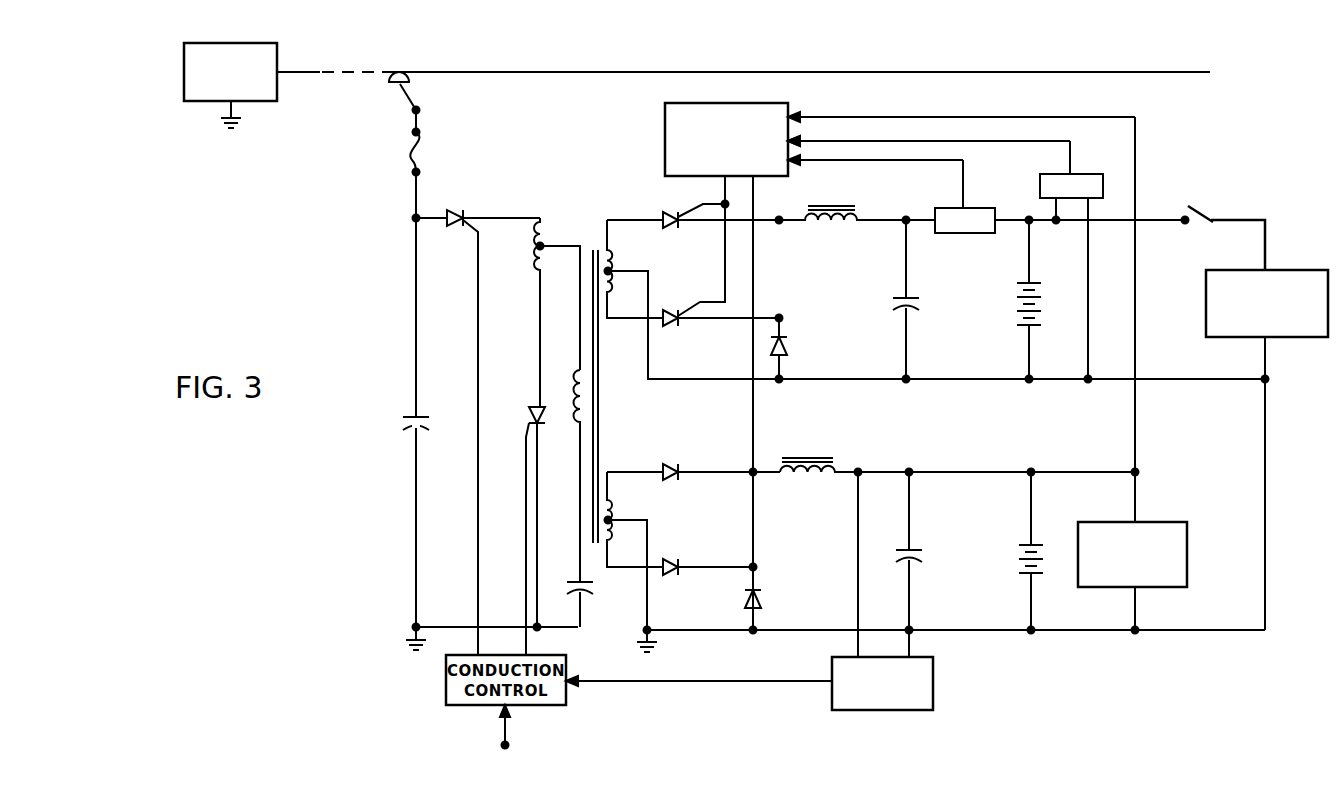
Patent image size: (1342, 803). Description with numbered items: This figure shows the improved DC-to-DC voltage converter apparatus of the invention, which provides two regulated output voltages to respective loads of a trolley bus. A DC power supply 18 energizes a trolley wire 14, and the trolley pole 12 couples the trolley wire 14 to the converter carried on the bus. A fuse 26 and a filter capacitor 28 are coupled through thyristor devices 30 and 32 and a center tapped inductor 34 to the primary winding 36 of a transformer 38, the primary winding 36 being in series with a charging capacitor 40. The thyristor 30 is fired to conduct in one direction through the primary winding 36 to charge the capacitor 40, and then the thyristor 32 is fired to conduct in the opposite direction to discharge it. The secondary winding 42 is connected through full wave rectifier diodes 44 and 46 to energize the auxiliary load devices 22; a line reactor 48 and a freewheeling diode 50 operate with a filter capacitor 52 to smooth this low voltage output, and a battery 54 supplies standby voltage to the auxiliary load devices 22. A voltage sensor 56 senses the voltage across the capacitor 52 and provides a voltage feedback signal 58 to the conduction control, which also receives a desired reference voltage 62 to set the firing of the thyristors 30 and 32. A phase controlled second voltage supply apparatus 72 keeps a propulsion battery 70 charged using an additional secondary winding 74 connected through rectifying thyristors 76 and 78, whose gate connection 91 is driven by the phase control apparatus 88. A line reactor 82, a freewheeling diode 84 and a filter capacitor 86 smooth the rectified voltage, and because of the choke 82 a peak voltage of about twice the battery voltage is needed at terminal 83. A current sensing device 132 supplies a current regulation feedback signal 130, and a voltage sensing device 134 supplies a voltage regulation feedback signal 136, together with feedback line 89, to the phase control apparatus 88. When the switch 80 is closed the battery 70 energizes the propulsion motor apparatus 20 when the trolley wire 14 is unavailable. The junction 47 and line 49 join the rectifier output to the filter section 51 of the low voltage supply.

The DC power supply 18 is at (277, 56).
The trolley wire 14 is at (420, 72).
The trolley pole 12 is at (410, 102).
The fuse 26 is at (406, 152).
The thyristor device 30 is at (455, 212).
The center tapped inductor 34 is at (533, 242).
The transformer 38 is at (600, 243).
The primary winding 36 is at (576, 386).
The thyristor device 32 is at (528, 414).
The filter capacitor 28 is at (404, 420).
The charging capacitor 40 is at (592, 590).
The additional secondary winding 74 is at (614, 268).
The rectifying thyristor 76 is at (671, 211).
The gate lead 91 is at (722, 196).
The rectifying thyristor 78 is at (677, 311).
The phase control apparatus 88 is at (660, 112).
The terminal 83 is at (784, 216).
The feedback line 89 is at (856, 115).
The voltage regulation feedback signal 136 is at (1072, 150).
The current regulation feedback signal 130 is at (965, 166).
The line reactor 82 is at (828, 226).
The second voltage supply apparatus 72 is at (838, 303).
The freewheeling diode 84 is at (786, 348).
The filter capacitor 86 is at (894, 302).
The current sensing device 132 is at (945, 208).
The voltage sensing device 134 is at (1055, 170).
The voltage supply battery 70 is at (1016, 298).
The switch 80 is at (1196, 226).
The propulsion motor apparatus 20 is at (1293, 270).
The line 49 is at (756, 440).
The full wave rectifier diode 46 is at (670, 463).
The junction 47 is at (751, 475).
The line reactor 48 is at (798, 482).
The secondary winding 42 is at (613, 512).
The full wave rectifier diode 44 is at (674, 562).
The filter 51 is at (820, 564).
The freewheeling diode 50 is at (743, 598).
The filter capacitor 52 is at (924, 552).
The battery 54 is at (1016, 560).
The auxiliary load devices 22 is at (1162, 522).
The voltage sensor 56 is at (838, 657).
The voltage feedback signal 58 is at (716, 680).
The reference voltage 62 is at (510, 733).